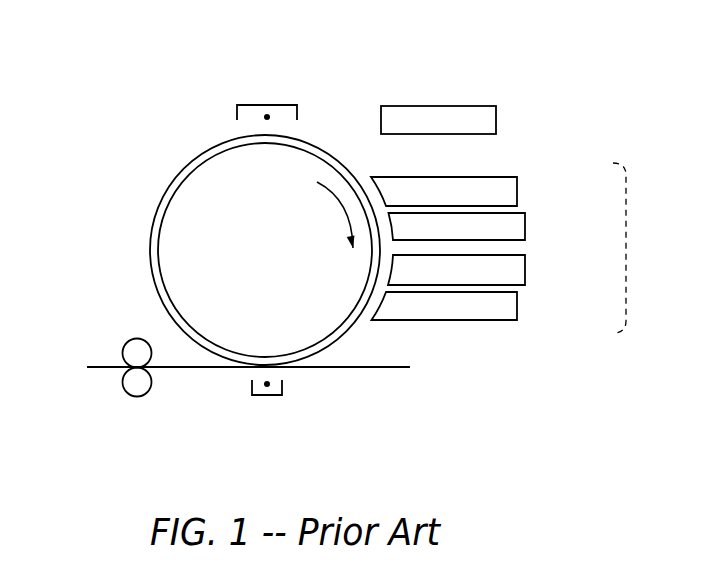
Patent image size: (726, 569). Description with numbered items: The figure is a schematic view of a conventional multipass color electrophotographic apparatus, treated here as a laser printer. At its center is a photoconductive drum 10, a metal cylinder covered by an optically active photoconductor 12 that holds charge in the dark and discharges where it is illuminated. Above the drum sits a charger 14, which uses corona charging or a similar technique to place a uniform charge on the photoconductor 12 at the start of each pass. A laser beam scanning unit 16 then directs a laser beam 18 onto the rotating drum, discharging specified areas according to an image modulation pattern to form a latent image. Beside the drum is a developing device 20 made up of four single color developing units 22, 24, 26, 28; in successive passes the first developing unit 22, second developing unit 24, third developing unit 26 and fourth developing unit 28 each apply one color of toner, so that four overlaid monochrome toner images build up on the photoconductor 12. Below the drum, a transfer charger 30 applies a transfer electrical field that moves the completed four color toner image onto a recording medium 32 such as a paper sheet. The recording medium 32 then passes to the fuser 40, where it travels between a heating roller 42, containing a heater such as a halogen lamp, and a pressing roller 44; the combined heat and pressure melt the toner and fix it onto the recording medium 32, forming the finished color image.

The photoconductive drum 10 is at (223, 170).
The photoconductor 12 is at (158, 207).
The charger 14 is at (252, 103).
The laser beam scanning unit 16 is at (482, 120).
The laser beam 18 is at (347, 148).
The developing device 20 is at (626, 247).
The first developing unit 22 is at (512, 190).
The second developing unit 24 is at (510, 227).
The third developing unit 26 is at (520, 270).
The fourth developing unit 28 is at (510, 305).
The transfer charger 30 is at (273, 397).
The recording medium 32 is at (380, 368).
The fuser 40 is at (107, 393).
The heating roller 42 is at (130, 350).
The pressing roller 44 is at (130, 385).